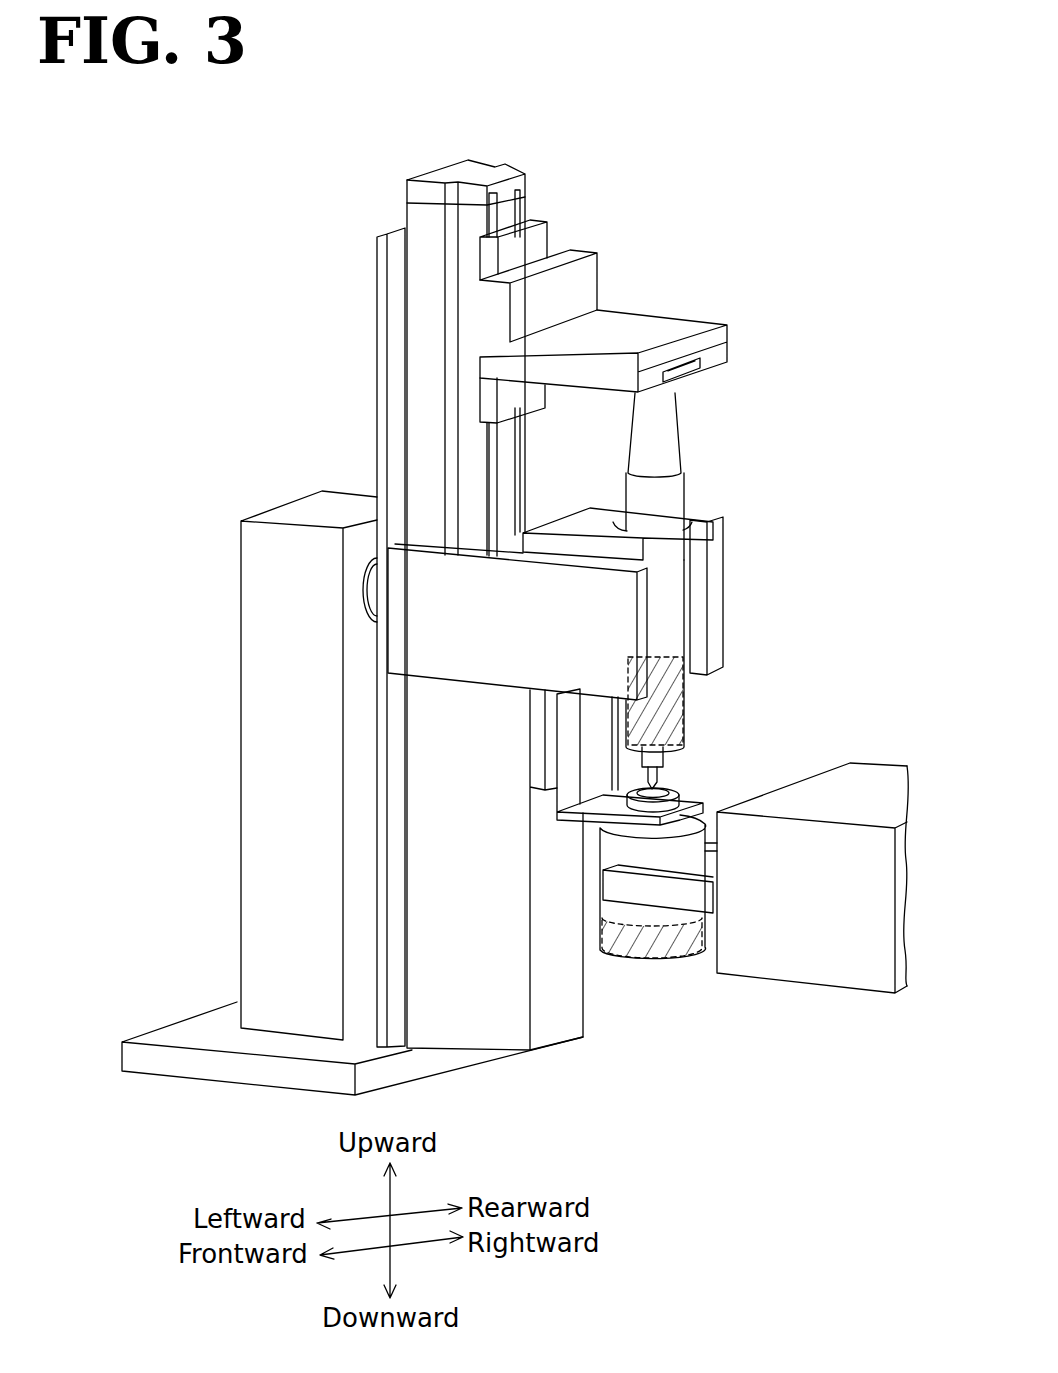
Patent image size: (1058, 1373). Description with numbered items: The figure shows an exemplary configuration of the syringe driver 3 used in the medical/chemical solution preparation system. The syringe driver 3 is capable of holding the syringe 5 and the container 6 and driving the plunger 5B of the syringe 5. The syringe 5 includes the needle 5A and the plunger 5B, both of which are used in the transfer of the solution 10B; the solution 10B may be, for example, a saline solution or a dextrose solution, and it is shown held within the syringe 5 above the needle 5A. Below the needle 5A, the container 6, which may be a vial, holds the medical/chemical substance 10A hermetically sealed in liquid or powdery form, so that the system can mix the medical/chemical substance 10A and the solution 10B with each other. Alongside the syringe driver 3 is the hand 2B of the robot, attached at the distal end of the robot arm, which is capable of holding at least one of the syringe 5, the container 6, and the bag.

The syringe driver 3 is at (692, 191).
The syringe 5 is at (688, 700).
The needle 5A is at (663, 787).
The plunger 5B is at (667, 437).
The solution 10B is at (665, 728).
The container 6 is at (633, 956).
The medical/chemical substance 10A is at (680, 956).
The hand 2B is at (783, 958).